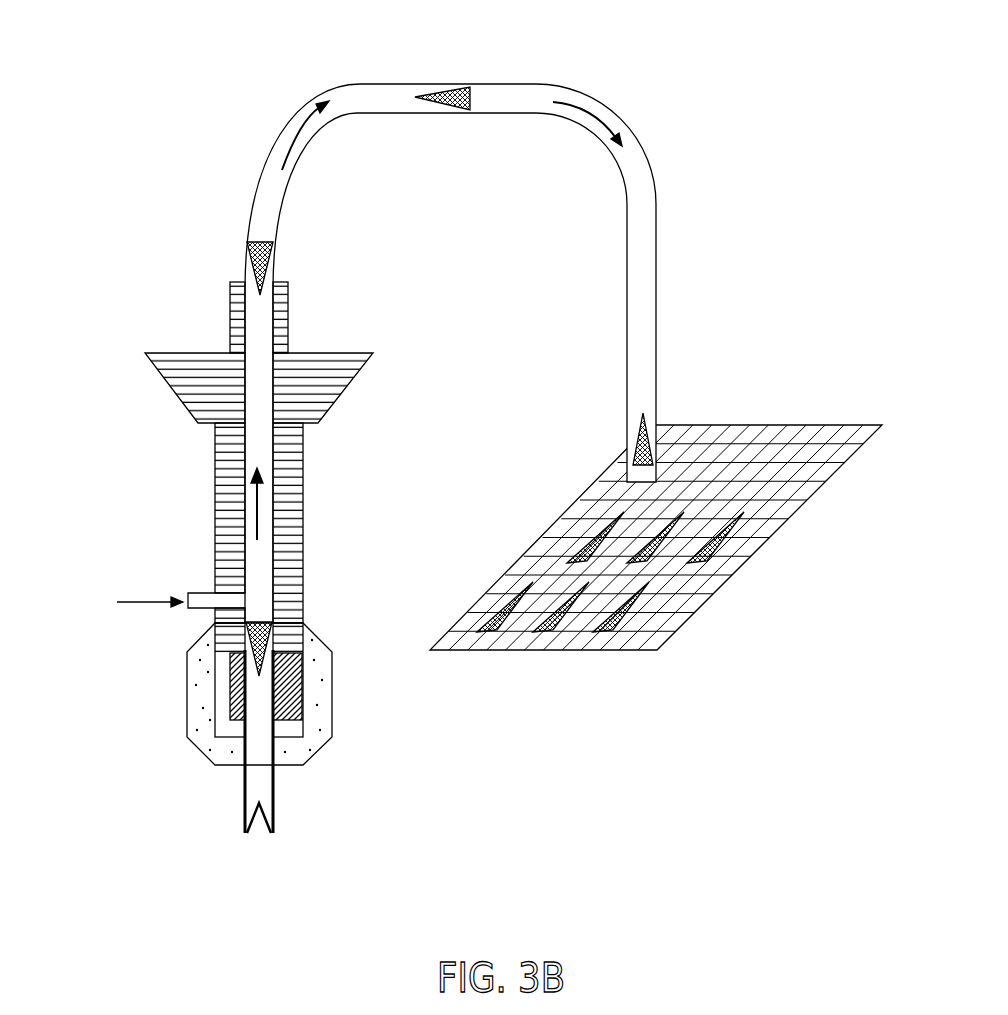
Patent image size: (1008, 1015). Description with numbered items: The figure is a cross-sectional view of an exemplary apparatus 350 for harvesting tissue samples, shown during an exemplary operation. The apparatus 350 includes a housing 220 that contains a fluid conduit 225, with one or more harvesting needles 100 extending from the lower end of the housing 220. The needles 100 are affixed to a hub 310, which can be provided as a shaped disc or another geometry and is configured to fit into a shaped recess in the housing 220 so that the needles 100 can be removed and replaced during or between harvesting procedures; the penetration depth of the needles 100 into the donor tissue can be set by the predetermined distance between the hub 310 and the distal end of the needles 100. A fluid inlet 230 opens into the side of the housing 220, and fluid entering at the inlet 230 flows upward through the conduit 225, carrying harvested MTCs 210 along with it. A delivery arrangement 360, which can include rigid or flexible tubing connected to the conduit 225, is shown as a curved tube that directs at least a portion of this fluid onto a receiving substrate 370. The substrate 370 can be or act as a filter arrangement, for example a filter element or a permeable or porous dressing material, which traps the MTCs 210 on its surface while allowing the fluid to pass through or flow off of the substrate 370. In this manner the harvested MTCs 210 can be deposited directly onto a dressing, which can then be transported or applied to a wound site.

The harvesting needle 100 is at (237, 790).
The MTCs 210 is at (447, 87).
The housing 220 is at (233, 472).
The fluid conduit 225 is at (263, 565).
The fluid inlet 230 is at (193, 593).
The hub 310 is at (237, 682).
The apparatus 350 is at (208, 237).
The delivery arrangement 360 is at (637, 223).
The receiving substrate 370 is at (613, 502).